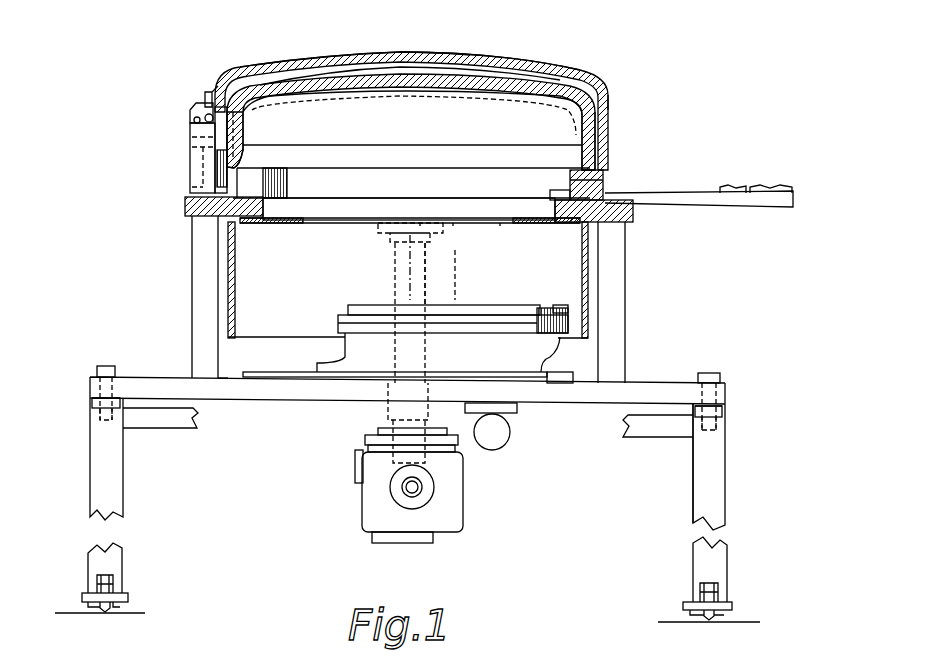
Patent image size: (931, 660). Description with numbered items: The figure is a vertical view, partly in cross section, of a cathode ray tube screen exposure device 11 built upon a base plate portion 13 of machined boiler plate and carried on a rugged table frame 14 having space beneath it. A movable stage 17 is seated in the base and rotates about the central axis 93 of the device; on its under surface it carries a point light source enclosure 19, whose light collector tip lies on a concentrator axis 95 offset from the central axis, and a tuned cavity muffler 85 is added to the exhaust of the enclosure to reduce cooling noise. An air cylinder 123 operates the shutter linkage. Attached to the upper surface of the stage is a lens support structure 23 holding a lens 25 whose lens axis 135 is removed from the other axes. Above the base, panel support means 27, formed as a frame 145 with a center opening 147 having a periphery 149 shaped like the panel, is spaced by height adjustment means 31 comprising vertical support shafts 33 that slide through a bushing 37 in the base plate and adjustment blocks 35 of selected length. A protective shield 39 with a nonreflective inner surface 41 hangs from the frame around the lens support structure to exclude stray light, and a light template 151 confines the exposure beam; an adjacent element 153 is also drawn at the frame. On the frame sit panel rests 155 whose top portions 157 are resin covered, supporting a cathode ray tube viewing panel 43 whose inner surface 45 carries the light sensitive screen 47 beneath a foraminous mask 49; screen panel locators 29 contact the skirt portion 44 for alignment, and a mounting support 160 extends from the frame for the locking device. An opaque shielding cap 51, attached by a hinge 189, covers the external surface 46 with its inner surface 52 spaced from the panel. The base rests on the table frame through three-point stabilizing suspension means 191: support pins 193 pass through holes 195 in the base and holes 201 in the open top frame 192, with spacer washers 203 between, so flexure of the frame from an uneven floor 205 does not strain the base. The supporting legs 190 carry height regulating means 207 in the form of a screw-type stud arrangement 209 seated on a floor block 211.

The screen exposure device 11 is at (606, 31).
The base plate portion 13 is at (648, 383).
The table frame 14 is at (750, 462).
The movable stage 17 is at (559, 377).
The point light source enclosure 19 is at (467, 494).
The lens support structure 23 is at (496, 360).
The lens 25 is at (542, 292).
The panel support means 27 is at (174, 193).
The screen panel locators 29 is at (193, 101).
The height adjustment means 31 is at (163, 279).
The vertical support shafts 33 is at (394, 282).
The adjustment blocks 35 is at (197, 252).
The bushing 37 is at (388, 390).
The protective shield 39 is at (222, 307).
The nonreflective inner surface 41 is at (235, 285).
The cathode ray tube viewing panel 43 is at (532, 78).
The skirt portion 44 is at (594, 130).
The inner surface 45 is at (273, 103).
The external surface 46 is at (303, 83).
The light sensitive screen 47 is at (340, 95).
The foraminous mask 49 is at (388, 100).
The opaque shielding cap 51 is at (386, 58).
The inner surface 52 is at (447, 64).
The tuned cavity muffler 85 is at (390, 487).
The central axis 93 is at (407, 267).
The concentrator axis 95 is at (413, 267).
The air cylinder 123 is at (504, 444).
The lens axis 135 is at (455, 287).
The frame 145 is at (190, 208).
The center opening 147 is at (455, 216).
The periphery 149 is at (557, 205).
The light template 151 is at (533, 227).
The seal strip 153 is at (497, 227).
The panel rests 155 is at (295, 196).
The top portions 157 is at (277, 170).
The mounting support 160 is at (698, 192).
The hinge 189 is at (193, 121).
The supporting legs 190 is at (722, 495).
The three-point stabilizing suspension means 191 is at (82, 402).
The open top frame 192 is at (147, 418).
The support pins 193 is at (110, 351).
The holes 195 is at (97, 385).
The holes 201 is at (100, 418).
The spacer washers 203 is at (93, 403).
The floor 205 is at (70, 597).
The height regulating means 207 is at (80, 580).
The screw-type stud arrangement 209 is at (127, 587).
The floor block 211 is at (123, 610).